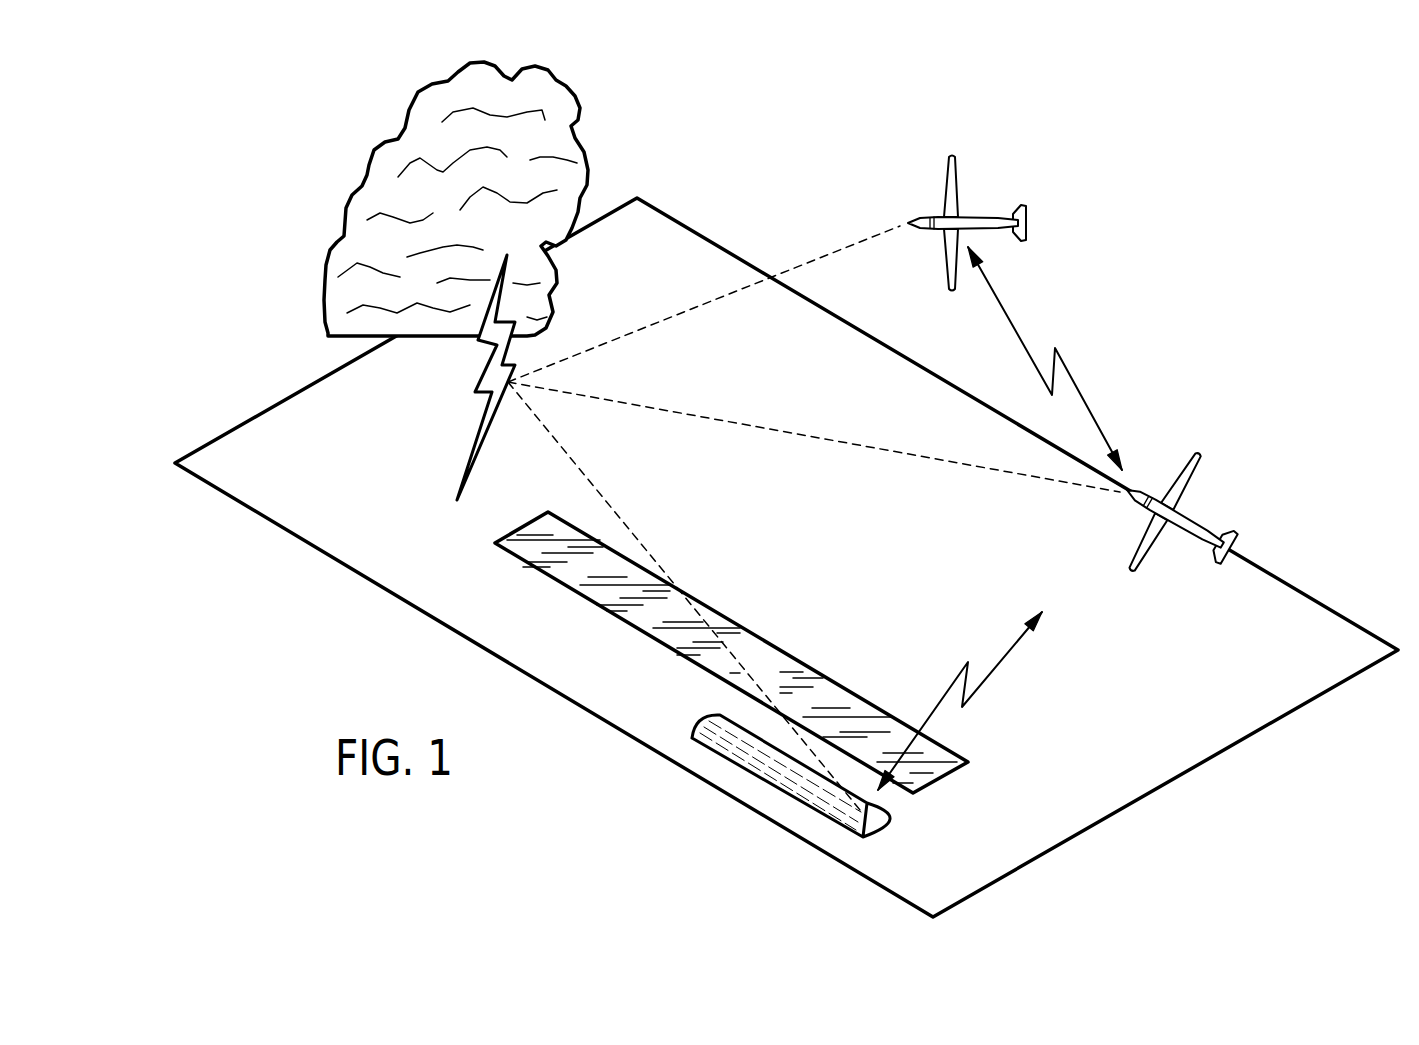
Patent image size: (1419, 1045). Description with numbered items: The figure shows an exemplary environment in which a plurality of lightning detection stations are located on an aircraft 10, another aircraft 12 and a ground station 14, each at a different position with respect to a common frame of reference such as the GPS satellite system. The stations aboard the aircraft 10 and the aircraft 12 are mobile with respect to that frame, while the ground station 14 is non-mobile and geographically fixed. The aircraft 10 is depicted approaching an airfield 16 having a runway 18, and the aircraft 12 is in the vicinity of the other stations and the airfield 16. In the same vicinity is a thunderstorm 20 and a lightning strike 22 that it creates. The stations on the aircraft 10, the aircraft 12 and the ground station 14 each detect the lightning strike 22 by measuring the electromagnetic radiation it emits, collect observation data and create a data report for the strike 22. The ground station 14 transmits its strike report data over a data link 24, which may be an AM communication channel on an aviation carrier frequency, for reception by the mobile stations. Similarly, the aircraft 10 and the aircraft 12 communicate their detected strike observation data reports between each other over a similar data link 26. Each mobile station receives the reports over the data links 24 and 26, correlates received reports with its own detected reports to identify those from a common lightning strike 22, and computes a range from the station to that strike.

The aircraft 10 is at (1188, 522).
The another aircraft 12 is at (975, 218).
The ground station 14 is at (880, 822).
The airfield 16 is at (1285, 645).
The runway 18 is at (812, 690).
The thunderstorm 20 is at (570, 150).
The lightning strike 22 is at (478, 441).
The data link 24 is at (990, 678).
The data link 26 is at (1082, 393).